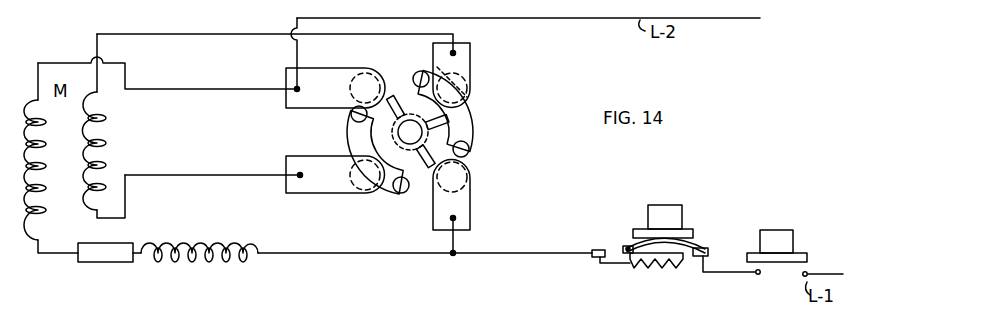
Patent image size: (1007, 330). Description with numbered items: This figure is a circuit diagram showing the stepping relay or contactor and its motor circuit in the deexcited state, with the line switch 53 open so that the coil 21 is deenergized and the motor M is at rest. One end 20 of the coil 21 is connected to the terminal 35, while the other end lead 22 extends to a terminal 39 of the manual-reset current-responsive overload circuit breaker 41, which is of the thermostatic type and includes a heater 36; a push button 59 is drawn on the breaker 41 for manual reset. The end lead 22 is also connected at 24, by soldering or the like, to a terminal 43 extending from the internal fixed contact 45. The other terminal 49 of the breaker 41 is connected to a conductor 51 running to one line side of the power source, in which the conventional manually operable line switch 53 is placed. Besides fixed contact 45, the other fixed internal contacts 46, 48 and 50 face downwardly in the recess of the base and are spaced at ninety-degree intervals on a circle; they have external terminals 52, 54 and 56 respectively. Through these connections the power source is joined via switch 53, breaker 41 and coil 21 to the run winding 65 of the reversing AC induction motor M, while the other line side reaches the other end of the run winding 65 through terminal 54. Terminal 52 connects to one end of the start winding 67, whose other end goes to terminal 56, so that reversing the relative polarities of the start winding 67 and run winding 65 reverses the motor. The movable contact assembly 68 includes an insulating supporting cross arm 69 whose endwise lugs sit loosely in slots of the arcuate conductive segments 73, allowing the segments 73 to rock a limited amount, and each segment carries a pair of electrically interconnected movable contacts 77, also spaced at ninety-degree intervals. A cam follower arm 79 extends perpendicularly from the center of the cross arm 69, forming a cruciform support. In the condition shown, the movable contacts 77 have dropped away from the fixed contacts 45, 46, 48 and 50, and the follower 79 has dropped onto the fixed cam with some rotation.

The end of coil 20 is at (137, 250).
The coil 21 is at (191, 264).
The end lead of coil 22 is at (297, 256).
The connection 24 is at (455, 243).
The terminal 35 is at (125, 262).
The heater 36 is at (653, 270).
The terminal of circuit breaker 39 is at (600, 250).
The manual-reset current-responsive overload circuit breaker 41 is at (656, 209).
The terminal 43 is at (470, 202).
The fixed internal contact 45 is at (466, 186).
The fixed internal contact 46 is at (467, 80).
The fixed internal contact 48 is at (389, 78).
The terminal of circuit breaker 49 is at (705, 249).
The fixed internal contact 50 is at (349, 193).
The conductor 51 is at (714, 274).
The external terminal 52 is at (470, 72).
The line switch 53 is at (838, 214).
The external terminal 54 is at (330, 108).
The external terminal 56 is at (323, 196).
The push button 59 is at (675, 218).
The run winding 65 is at (44, 142).
The start winding 67 is at (105, 118).
The movable contact assembly 68 is at (423, 137).
The supporting cross arm 69 is at (430, 116).
The arcuate conductive segments 73 is at (475, 133).
The movable contacts 77 is at (421, 71).
The cam follower arm 79 is at (406, 97).